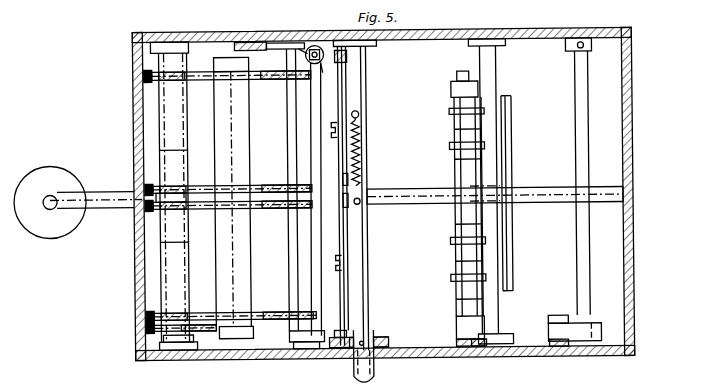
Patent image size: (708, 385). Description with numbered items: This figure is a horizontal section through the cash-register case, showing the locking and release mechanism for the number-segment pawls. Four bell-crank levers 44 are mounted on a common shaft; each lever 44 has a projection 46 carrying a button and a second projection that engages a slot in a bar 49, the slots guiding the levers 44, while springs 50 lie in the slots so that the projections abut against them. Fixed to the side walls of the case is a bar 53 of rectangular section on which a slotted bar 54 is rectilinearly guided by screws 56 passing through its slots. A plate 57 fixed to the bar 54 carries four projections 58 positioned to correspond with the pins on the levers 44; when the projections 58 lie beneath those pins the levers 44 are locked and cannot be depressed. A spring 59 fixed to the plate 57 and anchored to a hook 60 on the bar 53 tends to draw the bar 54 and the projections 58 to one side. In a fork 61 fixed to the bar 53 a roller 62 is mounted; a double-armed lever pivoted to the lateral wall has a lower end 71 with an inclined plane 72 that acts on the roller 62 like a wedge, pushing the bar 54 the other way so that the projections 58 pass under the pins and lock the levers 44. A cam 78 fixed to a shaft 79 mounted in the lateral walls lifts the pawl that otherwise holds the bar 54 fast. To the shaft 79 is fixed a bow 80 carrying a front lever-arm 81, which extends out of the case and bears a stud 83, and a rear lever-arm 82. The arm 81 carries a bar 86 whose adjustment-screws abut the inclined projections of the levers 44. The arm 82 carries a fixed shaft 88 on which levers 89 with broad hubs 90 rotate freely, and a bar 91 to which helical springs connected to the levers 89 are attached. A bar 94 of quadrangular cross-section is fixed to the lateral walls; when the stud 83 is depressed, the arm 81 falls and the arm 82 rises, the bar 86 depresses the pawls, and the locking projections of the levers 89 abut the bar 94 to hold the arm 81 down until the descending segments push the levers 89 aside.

The bell-crank lever 44 is at (270, 79).
The projection 46 is at (183, 76).
The bar 49 is at (144, 116).
The spring 50 is at (148, 75).
The bar 53 is at (368, 86).
The bar 54 is at (323, 198).
The screw 56 is at (332, 206).
The plate 57 is at (349, 239).
The projection 58 is at (345, 59).
The spring 59 is at (361, 138).
The hook 60 is at (360, 114).
The fork 61 is at (319, 76).
The roller 62 is at (318, 45).
The lower end of double-armed lever 71 is at (252, 41).
The inclined plane 72 is at (296, 42).
The cam 78 is at (338, 349).
The shaft 79 is at (300, 262).
The bow 80 is at (290, 150).
The lever-arm 81 is at (111, 207).
The lever-arm 82 is at (427, 204).
The stud 83 is at (49, 175).
The bar 86 is at (222, 130).
The shaft 88 is at (460, 79).
The lever 89 is at (455, 112).
The hub 90 is at (456, 146).
The bar 91 is at (507, 150).
The bar 94 is at (492, 78).